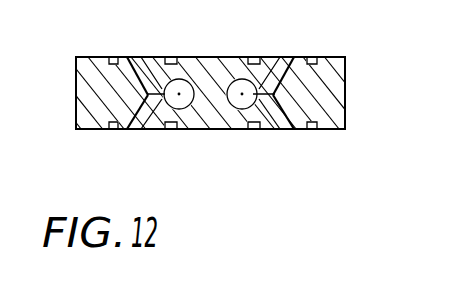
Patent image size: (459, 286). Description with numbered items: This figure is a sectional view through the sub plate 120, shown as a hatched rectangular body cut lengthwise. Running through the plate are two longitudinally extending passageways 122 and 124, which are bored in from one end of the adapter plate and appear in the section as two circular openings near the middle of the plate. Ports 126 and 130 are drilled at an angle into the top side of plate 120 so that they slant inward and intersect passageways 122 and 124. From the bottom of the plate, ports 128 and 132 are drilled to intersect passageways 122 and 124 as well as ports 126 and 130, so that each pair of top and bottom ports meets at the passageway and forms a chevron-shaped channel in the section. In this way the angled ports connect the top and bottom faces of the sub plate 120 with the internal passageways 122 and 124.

The sub plate 120 is at (338, 98).
The passageway 122 is at (186, 90).
The passageway 124 is at (239, 103).
The port 126 is at (152, 68).
The port 128 is at (147, 122).
The port 130 is at (280, 64).
The port 132 is at (282, 123).